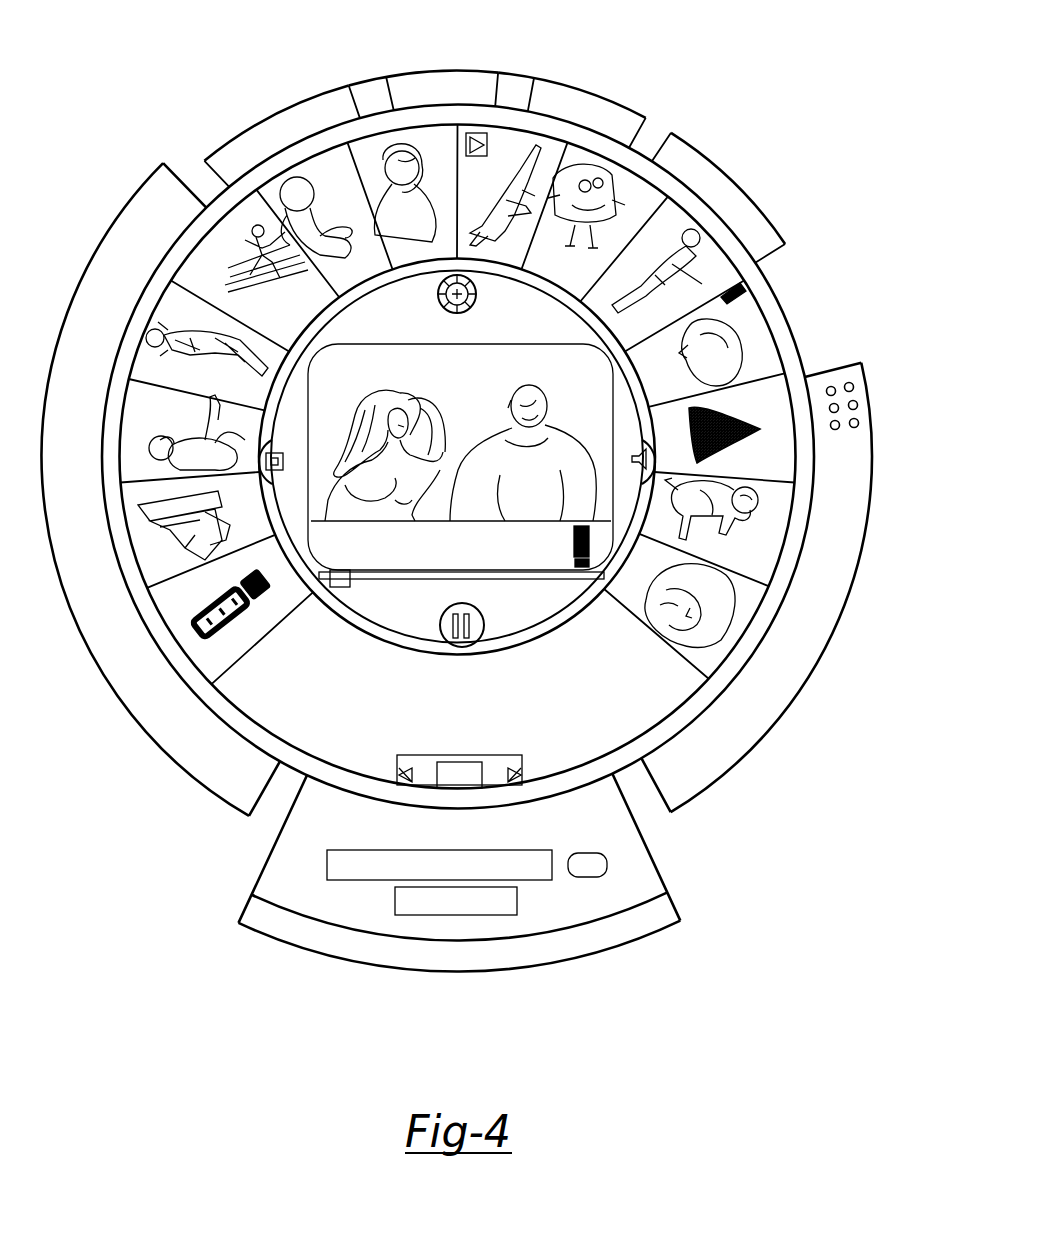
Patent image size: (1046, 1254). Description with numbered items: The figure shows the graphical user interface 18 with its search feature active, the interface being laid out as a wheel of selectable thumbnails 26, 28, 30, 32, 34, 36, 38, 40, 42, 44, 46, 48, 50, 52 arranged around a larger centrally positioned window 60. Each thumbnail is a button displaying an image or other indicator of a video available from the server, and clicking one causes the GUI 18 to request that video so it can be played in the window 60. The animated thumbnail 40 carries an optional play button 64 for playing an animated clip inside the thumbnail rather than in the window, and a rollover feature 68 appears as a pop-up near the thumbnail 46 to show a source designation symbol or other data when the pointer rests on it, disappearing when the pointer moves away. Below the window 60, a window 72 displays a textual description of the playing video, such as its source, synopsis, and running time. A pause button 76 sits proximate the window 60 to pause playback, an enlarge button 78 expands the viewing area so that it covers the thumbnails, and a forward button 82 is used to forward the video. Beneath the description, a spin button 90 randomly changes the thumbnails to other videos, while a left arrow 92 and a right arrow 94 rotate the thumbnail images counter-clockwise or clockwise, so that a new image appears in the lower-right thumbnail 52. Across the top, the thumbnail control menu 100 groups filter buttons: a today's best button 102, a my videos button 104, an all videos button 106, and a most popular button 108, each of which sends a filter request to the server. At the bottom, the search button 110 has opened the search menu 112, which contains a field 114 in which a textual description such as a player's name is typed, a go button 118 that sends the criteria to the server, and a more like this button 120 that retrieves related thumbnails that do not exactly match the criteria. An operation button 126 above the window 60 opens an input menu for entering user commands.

The graphical user interface 18 is at (714, 63).
The thumbnail 26 is at (181, 617).
The thumbnail 28 is at (146, 517).
The thumbnail 30 is at (148, 415).
The thumbnail 32 is at (188, 312).
The thumbnail 34 is at (255, 230).
The thumbnail 36 is at (346, 175).
The thumbnail 38 is at (448, 148).
The thumbnail 40 is at (551, 165).
The thumbnail 42 is at (648, 210).
The thumbnail 44 is at (721, 282).
The thumbnail 46 is at (770, 368).
The thumbnail 48 is at (789, 475).
The thumbnail 50 is at (768, 576).
The lower-right thumbnail 52 is at (710, 677).
The window 60 is at (483, 345).
The play button 64 is at (488, 141).
The rollover feature 68 is at (746, 297).
The window 72 is at (320, 658).
The pause button 76 is at (466, 603).
The enlarge button 78 is at (287, 462).
The forward button 82 is at (629, 460).
The spin button 90 is at (483, 768).
The left arrow 92 is at (404, 771).
The right arrow 94 is at (519, 771).
The thumbnail control menu 100 is at (198, 120).
The today's best button 102 is at (296, 97).
The my videos button 104 is at (458, 71).
The all videos button 106 is at (605, 97).
The most popular button 108 is at (764, 196).
The search button 110 is at (616, 945).
The search menu 112 is at (609, 823).
The field 114 is at (351, 850).
The go button 118 is at (609, 870).
The more like this button 120 is at (395, 904).
The operation button 126 is at (449, 312).